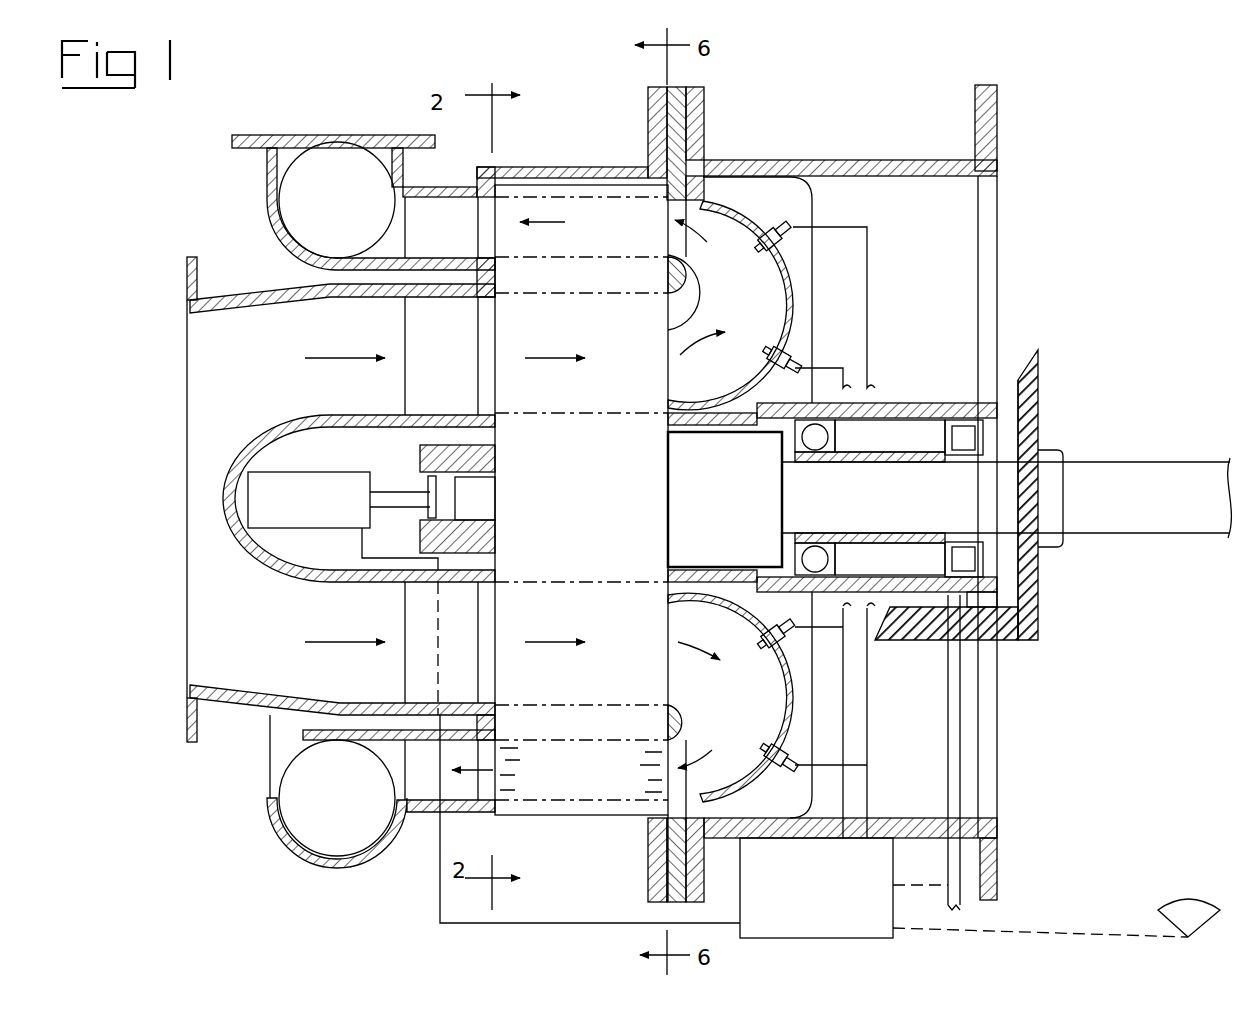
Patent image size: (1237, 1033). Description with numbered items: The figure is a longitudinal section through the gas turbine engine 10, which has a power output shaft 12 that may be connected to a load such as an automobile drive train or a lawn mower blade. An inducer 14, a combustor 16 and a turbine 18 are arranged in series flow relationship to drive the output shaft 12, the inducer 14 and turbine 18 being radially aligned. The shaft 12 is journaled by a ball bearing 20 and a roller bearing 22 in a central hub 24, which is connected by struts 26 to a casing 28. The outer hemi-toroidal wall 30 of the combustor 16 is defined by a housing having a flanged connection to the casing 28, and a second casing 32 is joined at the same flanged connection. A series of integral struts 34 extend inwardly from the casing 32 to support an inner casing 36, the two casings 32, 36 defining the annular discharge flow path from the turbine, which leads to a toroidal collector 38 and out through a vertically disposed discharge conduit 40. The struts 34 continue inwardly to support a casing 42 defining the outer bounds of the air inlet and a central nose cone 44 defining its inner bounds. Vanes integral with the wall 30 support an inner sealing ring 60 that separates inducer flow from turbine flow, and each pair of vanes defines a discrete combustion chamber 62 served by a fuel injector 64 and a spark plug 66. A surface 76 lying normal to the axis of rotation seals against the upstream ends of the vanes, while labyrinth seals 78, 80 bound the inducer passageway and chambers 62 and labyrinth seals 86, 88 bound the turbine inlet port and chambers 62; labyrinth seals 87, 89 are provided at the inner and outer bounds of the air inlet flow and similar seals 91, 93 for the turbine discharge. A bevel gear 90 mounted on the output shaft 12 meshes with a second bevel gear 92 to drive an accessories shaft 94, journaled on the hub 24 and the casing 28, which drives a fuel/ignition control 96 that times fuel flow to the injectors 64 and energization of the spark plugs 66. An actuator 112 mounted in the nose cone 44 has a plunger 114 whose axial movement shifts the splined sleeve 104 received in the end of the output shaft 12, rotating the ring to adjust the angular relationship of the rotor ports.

The engine 10 is at (127, 257).
The power output shaft 12 is at (1180, 460).
The inducer 14 is at (510, 332).
The combustor 16 is at (702, 494).
The turbine 18 is at (508, 235).
The ball bearing 20 is at (842, 445).
The roller bearing 22 is at (943, 443).
The central hub 24 is at (915, 403).
The struts 26 is at (812, 207).
The casing 28 is at (845, 160).
The outer hemi-toroidal wall 30 is at (790, 258).
The second casing 32 is at (565, 168).
The integral struts 34 is at (403, 213).
The inner casing 36 is at (418, 255).
The toroidal collector 38 is at (298, 225).
The discharge conduit 40 is at (283, 134).
The casing 42 is at (425, 702).
The central nose cone 44 is at (252, 555).
The inner sealing ring 60 is at (670, 320).
The combustion chamber 62 is at (752, 322).
The fuel injector 64 is at (790, 358).
The spark plug 66 is at (780, 235).
The surface 76 is at (670, 383).
The labyrinth seal 78 is at (667, 287).
The labyrinth seal 80 is at (668, 420).
The labyrinth seal 86 is at (668, 262).
The labyrinth seal 87 is at (497, 578).
The labyrinth seal 88 is at (660, 192).
The labyrinth seal 89 is at (496, 707).
The bevel gear 90 is at (1045, 370).
The seal 91 is at (495, 262).
The second bevel gear 92 is at (1000, 648).
The seal 93 is at (502, 188).
The accessories shaft 94 is at (963, 780).
The fuel ignition control 96 is at (895, 865).
The splined sleeve 104 is at (418, 525).
The actuator 112 is at (295, 470).
The plunger 114 is at (405, 490).